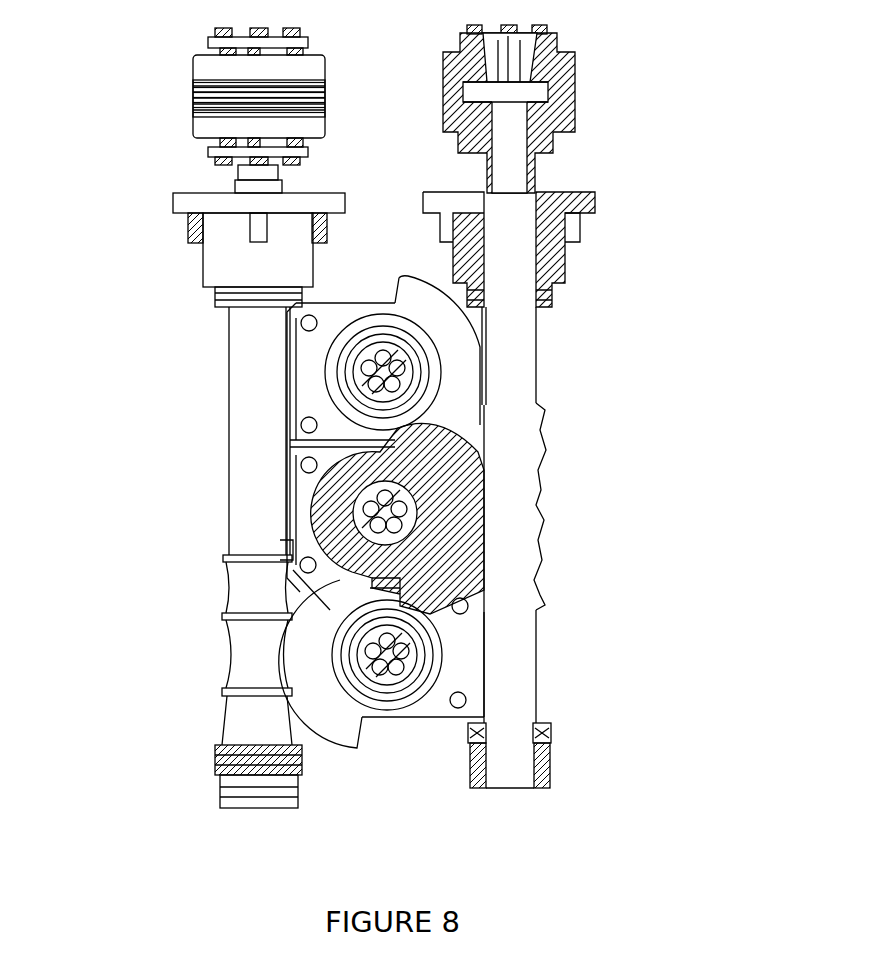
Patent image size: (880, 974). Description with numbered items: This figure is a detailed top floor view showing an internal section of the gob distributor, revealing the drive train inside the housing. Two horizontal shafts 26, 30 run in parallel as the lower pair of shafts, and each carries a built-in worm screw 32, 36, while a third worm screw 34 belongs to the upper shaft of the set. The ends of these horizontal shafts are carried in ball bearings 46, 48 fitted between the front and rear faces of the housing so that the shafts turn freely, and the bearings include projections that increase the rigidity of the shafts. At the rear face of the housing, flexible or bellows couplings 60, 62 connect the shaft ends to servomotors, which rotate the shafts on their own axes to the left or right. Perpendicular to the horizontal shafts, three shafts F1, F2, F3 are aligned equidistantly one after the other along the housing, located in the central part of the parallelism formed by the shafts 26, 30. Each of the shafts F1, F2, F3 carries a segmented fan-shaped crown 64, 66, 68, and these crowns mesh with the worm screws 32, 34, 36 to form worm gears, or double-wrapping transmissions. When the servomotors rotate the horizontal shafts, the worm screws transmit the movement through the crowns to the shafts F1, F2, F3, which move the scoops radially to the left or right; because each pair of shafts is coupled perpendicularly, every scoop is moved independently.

The shaft 26 is at (515, 626).
The shaft 30 is at (247, 536).
The worm screw 32 is at (540, 336).
The worm screw 34 is at (515, 507).
The worm screw 36 is at (247, 652).
The ball bearing 46 is at (547, 747).
The ball bearing 48 is at (545, 262).
The flexible or bellows coupling 60 is at (543, 74).
The flexible or bellows coupling 62 is at (237, 97).
The segmented fan-shaped crown 64 is at (318, 675).
The segmented fan-shaped crown 66 is at (425, 475).
The segmented fan-shaped crown 68 is at (427, 323).
The shaft F1 is at (357, 660).
The shaft F2 is at (362, 510).
The shaft F3 is at (350, 368).